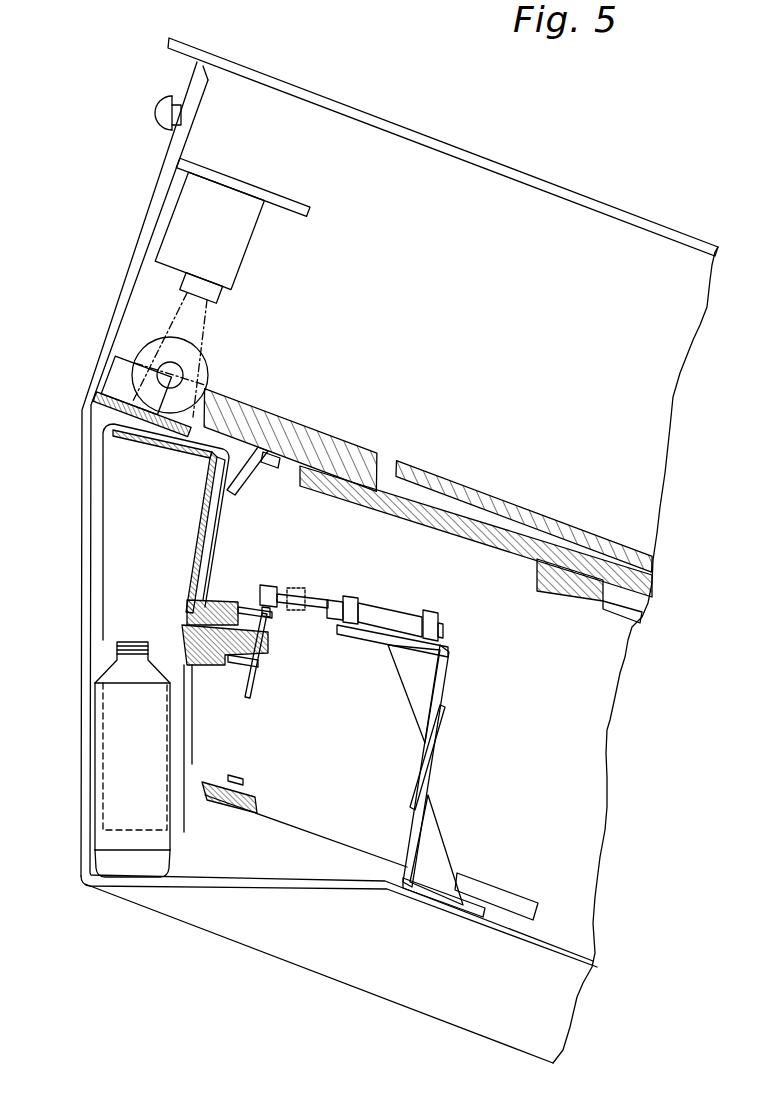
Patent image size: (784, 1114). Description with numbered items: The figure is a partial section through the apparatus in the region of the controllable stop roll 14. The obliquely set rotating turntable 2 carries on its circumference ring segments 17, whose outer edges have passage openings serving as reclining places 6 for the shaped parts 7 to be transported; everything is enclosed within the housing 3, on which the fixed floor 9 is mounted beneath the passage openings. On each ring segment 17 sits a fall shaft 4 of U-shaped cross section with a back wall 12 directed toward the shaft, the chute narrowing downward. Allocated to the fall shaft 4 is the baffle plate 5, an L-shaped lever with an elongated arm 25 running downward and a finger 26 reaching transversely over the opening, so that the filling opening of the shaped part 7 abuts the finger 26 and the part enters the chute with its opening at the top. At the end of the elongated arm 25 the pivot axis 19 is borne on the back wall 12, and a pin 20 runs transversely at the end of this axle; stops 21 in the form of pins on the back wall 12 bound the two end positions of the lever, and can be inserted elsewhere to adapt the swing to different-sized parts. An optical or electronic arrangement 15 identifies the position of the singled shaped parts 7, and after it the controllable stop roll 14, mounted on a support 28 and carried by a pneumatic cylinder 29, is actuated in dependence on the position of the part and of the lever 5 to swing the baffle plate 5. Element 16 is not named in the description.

The turntable 2 is at (410, 462).
The housing 3 is at (81, 652).
The fall shaft 4 is at (115, 598).
The baffle plate 5 is at (118, 440).
The reclining place 6 is at (118, 372).
The shaped part 7 is at (200, 360).
The fixed floor 9 is at (97, 398).
The back wall 12 is at (212, 530).
The controllable stop roll 14 is at (275, 582).
The optical or electronic arrangement 15 is at (237, 243).
The lower slab 16 is at (512, 550).
The ring segment 17 is at (280, 418).
The pivot axis 19 is at (232, 640).
The pin 20 is at (250, 690).
The stops 21 is at (272, 617).
The elongated arm 25 is at (197, 548).
The finger 26 is at (207, 452).
The support 28 is at (440, 690).
The pneumatic cylinder 29 is at (388, 613).